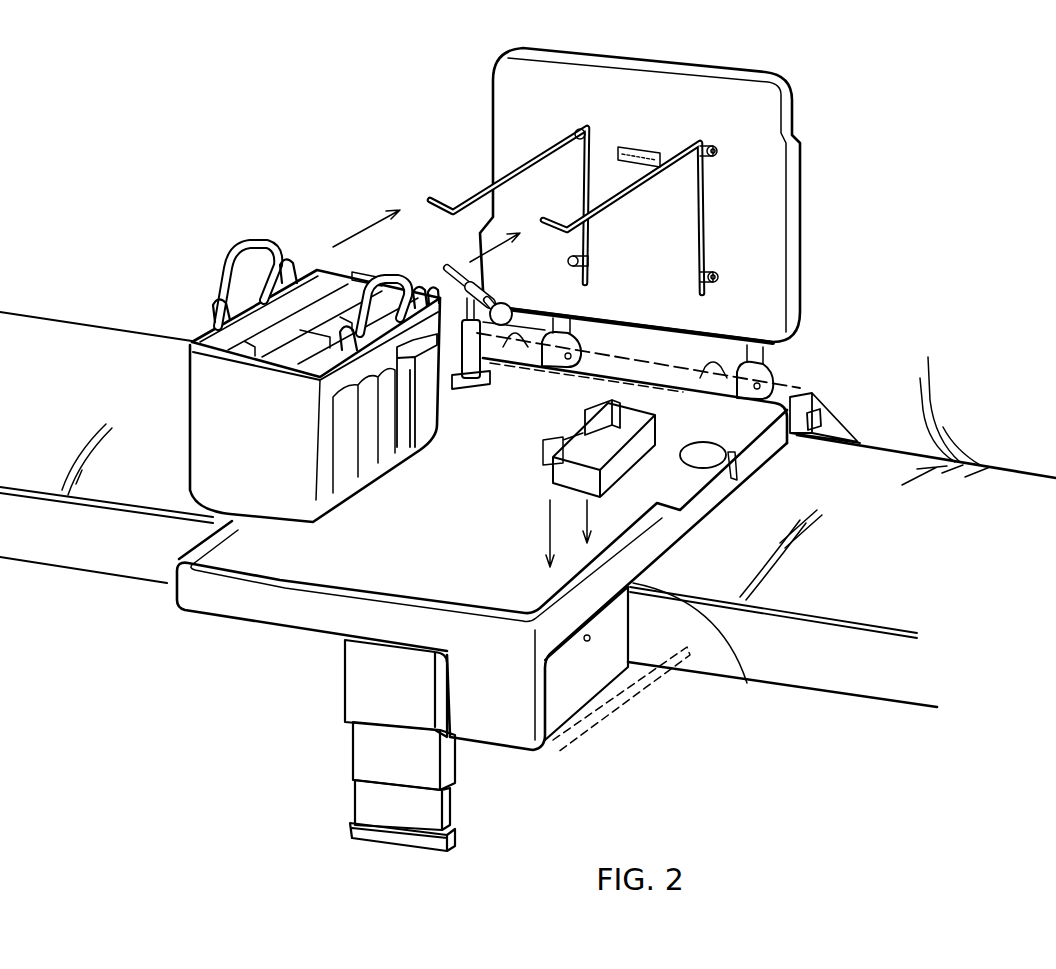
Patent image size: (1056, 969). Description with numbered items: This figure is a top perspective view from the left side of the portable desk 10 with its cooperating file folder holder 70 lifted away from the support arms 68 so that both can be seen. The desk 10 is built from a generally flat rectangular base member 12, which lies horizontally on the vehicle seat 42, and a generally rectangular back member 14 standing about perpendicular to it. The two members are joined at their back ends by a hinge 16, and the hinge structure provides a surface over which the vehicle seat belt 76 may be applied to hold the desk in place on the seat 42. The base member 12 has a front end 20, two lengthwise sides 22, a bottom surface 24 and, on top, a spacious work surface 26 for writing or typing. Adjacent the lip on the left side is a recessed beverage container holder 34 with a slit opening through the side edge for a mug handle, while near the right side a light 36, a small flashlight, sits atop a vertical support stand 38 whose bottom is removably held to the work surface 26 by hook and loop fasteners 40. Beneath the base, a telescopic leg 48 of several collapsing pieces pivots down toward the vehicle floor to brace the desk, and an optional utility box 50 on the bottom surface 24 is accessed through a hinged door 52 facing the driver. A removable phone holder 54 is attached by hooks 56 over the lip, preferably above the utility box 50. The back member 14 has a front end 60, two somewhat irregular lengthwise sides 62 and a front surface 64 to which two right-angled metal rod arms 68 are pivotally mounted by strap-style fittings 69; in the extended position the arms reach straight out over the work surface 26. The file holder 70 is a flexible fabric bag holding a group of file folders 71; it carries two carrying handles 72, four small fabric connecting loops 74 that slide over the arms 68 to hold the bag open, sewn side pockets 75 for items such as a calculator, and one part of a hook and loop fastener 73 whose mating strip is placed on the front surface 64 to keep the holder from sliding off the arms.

The portable desk 10 is at (940, 118).
The base member 12 is at (203, 600).
The back member 14 is at (660, 83).
The hinge 16 is at (768, 372).
The front end 20 is at (279, 597).
The lengthwise sides 22 is at (657, 590).
The bottom surface 24 is at (710, 520).
The work surface 26 is at (353, 572).
The beverage container holder 34 is at (707, 452).
The light 36 is at (447, 268).
The support stand 38 is at (470, 378).
The hook and loop fasteners 40 is at (457, 389).
The vehicle seat 42 is at (880, 673).
The telescopic leg 48 is at (367, 758).
The utility box 50 is at (507, 720).
The hinged door 52 is at (597, 653).
The phone holder 54 is at (577, 480).
The hooks 56 is at (590, 407).
The front end 60 is at (557, 53).
The lengthwise sides 62 is at (493, 100).
The front surface 64 is at (730, 97).
The support arms 68 is at (477, 187).
The fittings 69 is at (590, 133).
The file folder holder 70 is at (212, 410).
The file folders 71 is at (293, 357).
The carrying handles 72 is at (263, 240).
The hook and loop fastener strips 73 is at (640, 147).
The connecting loops 74 is at (213, 303).
The side pockets 75 is at (415, 430).
The vehicle seat belt 76 is at (790, 398).